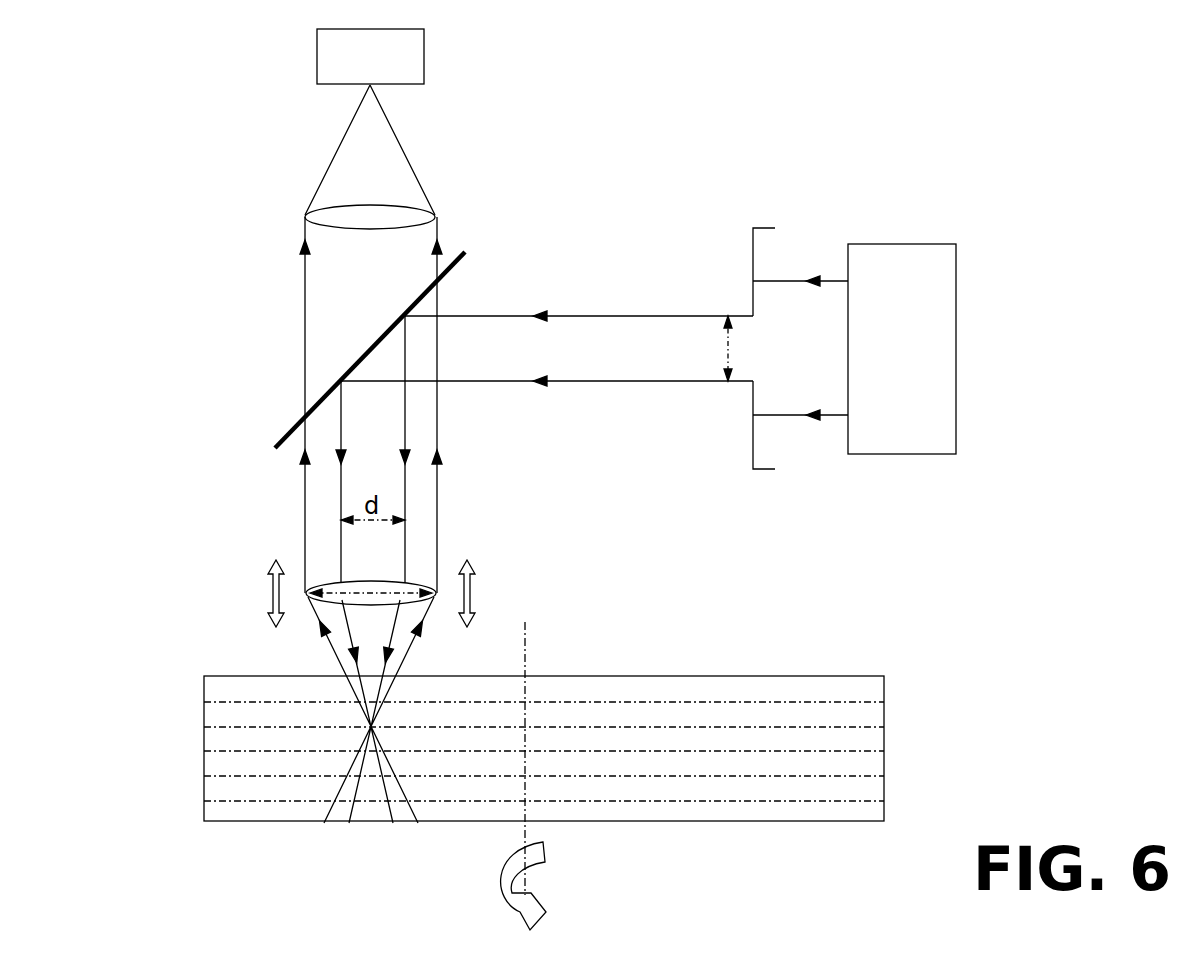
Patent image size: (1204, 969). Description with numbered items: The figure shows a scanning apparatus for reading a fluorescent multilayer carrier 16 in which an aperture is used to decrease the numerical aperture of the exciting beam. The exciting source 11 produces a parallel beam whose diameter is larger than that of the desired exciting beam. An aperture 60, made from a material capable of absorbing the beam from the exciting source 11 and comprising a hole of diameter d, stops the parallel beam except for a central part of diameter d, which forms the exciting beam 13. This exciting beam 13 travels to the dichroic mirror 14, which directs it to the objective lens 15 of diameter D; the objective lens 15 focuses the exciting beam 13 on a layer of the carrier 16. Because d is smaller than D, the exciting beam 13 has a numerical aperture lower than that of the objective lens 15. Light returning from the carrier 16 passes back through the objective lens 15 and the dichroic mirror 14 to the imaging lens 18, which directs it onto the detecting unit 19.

The exciting source 11 is at (930, 244).
The exciting beam 13 is at (406, 410).
The dichroic mirror 14 is at (290, 433).
The objective lens 15 is at (435, 593).
The fluorescent multilayer carrier 16 is at (884, 759).
The imaging lens 18 is at (410, 219).
The detecting unit 19 is at (424, 50).
The aperture 60 is at (757, 228).